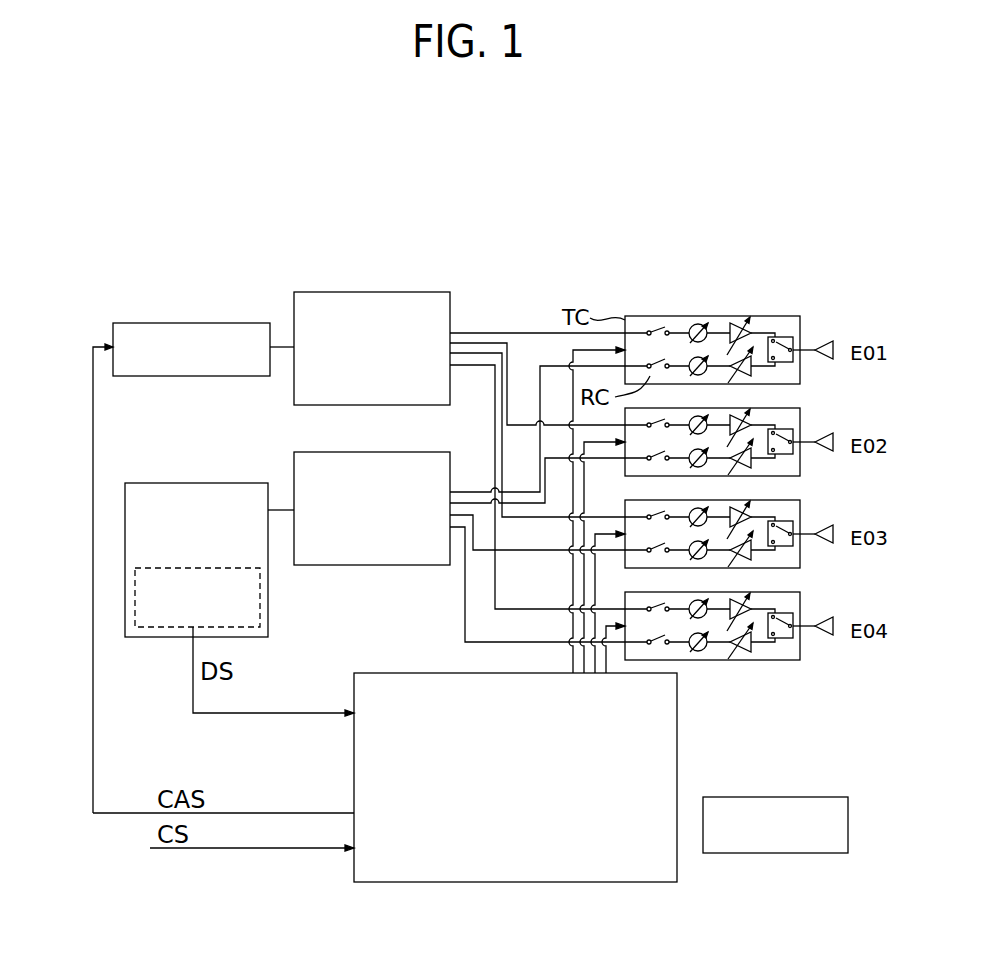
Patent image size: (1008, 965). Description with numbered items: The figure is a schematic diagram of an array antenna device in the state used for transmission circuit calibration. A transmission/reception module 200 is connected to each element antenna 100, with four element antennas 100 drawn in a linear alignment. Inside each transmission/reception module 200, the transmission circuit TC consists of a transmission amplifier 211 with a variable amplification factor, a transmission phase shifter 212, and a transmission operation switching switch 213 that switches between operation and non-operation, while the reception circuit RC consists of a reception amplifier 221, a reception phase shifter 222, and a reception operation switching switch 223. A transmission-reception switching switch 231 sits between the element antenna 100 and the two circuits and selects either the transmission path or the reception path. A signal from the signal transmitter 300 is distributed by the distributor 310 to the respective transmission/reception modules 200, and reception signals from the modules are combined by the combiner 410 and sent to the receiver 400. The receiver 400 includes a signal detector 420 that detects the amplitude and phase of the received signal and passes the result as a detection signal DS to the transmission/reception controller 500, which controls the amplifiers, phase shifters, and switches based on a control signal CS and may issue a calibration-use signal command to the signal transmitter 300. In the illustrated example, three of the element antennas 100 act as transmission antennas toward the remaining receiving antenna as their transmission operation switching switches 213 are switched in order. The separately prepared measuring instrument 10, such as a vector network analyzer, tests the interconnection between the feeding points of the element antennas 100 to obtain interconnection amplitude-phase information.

The measuring instrument 10 is at (830, 797).
The element antenna 100 is at (832, 343).
The transmission/reception module 200 is at (731, 336).
The transmission amplifier 211 is at (742, 318).
The transmission phase shifter 212 is at (698, 323).
The transmission operation switching switch 213 is at (650, 324).
The reception amplifier 221 is at (760, 372).
The reception phase shifter 222 is at (708, 374).
The reception operation switching switch 223 is at (654, 371).
The transmission-reception switching switch 231 is at (781, 337).
The signal transmitter 300 is at (155, 323).
The distributor 310 is at (322, 292).
The receiver 400 is at (160, 483).
The combiner 410 is at (294, 462).
The signal detector 420 is at (152, 627).
The transmission/reception controller 500 is at (412, 673).